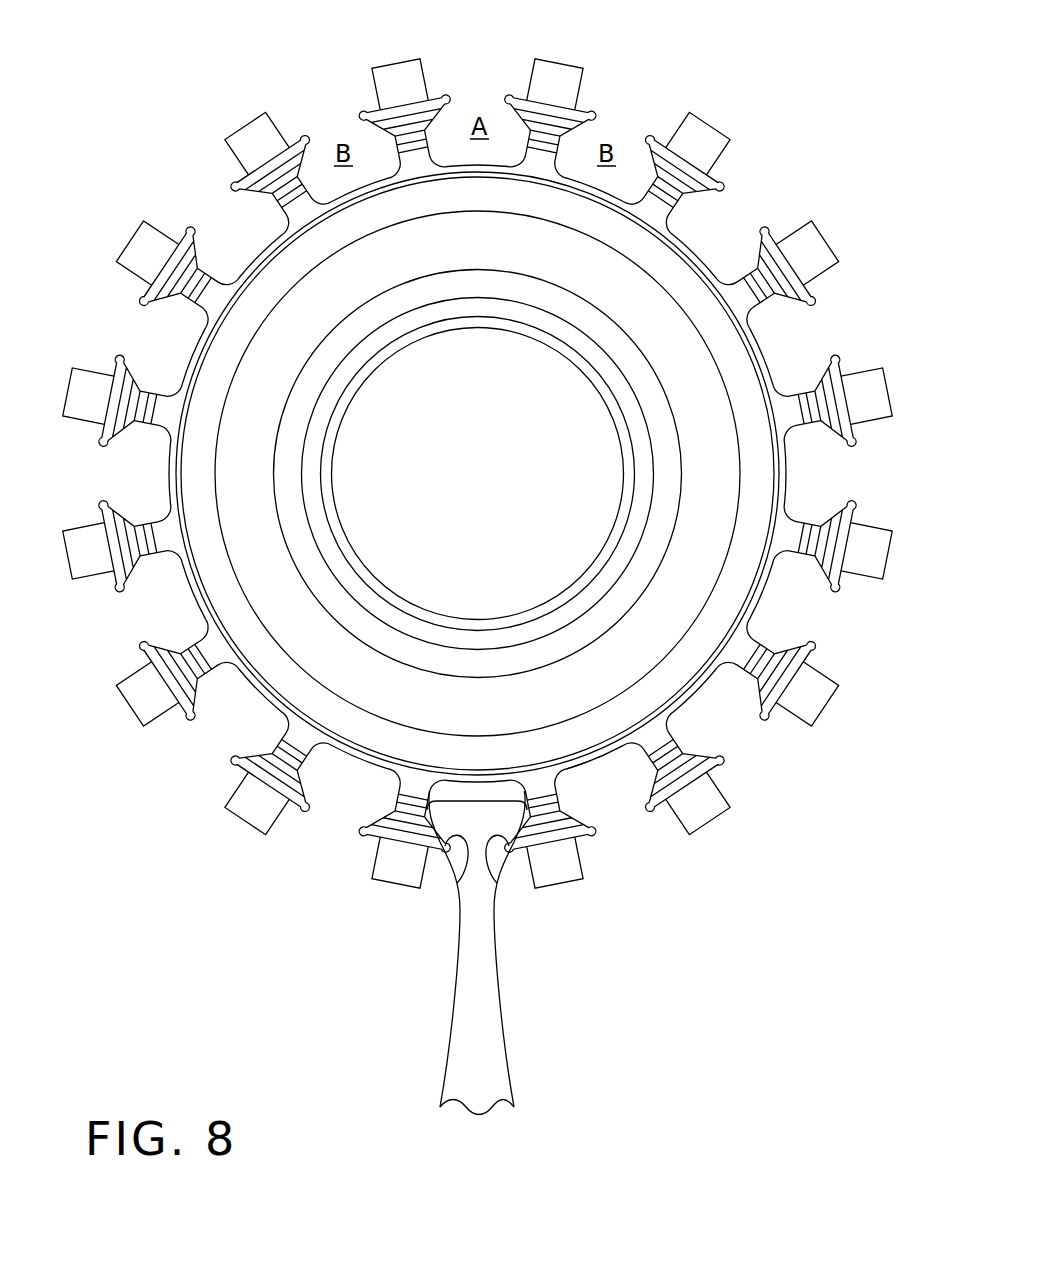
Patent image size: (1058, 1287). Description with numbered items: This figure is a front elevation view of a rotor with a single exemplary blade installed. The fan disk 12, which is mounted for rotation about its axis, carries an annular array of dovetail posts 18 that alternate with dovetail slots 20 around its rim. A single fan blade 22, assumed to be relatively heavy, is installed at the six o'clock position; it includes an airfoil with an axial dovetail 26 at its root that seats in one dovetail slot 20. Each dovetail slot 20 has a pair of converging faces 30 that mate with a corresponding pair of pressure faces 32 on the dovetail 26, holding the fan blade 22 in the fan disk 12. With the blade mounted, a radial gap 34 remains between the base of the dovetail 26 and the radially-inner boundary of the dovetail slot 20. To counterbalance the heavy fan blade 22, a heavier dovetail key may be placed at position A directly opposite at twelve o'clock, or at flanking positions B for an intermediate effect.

The fan disk 12 is at (704, 66).
The dovetail post 18 is at (376, 84).
The dovetail slot 20 is at (231, 237).
The fan blade 22 is at (485, 1013).
The axial dovetail 26 is at (490, 827).
The converging faces 30 is at (648, 806).
The pressure faces 32 is at (453, 882).
The radial gap 34 is at (455, 790).